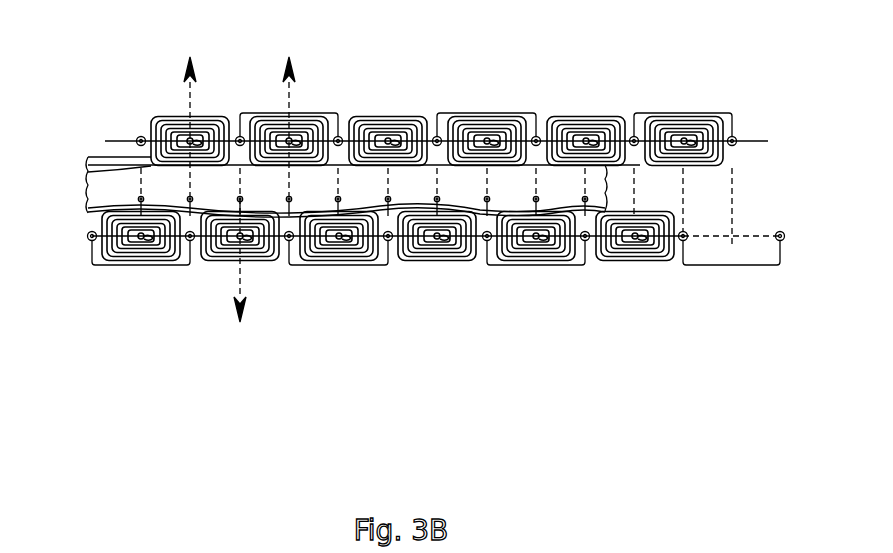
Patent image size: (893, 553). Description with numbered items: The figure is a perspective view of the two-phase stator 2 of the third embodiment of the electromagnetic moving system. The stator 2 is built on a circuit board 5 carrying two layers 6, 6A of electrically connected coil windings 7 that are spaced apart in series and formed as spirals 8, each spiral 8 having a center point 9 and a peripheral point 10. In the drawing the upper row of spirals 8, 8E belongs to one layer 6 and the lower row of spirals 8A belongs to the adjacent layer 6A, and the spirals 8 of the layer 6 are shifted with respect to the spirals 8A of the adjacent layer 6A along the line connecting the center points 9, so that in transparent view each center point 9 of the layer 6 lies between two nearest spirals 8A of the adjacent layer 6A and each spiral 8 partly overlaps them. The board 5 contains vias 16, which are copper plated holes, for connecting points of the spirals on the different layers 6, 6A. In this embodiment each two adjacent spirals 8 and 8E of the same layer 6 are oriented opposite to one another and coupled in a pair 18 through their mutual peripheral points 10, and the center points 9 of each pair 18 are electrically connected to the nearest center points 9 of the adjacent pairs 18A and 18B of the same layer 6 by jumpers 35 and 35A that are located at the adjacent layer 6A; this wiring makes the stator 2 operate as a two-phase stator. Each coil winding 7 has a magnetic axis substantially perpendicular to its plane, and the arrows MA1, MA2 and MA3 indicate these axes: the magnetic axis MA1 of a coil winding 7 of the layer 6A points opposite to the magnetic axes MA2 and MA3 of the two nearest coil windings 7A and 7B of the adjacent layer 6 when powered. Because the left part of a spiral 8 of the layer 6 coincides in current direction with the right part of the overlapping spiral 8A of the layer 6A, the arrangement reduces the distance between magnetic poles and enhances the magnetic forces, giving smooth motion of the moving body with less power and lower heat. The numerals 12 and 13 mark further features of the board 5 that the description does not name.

The stator 2 is at (650, 284).
The circuit board 5 is at (92, 163).
The layer 6 is at (155, 118).
The adjacent layer 6A is at (216, 248).
The coil winding 7 is at (266, 256).
The coil winding 7A is at (217, 118).
The coil winding 7B is at (317, 118).
The spiral 8 is at (405, 118).
The spiral 8A is at (430, 263).
The spiral 8E is at (515, 125).
The center point 9 is at (487, 128).
The peripheral point 10 is at (633, 125).
The conductor 12 is at (172, 245).
The connecting line (21) 13 is at (755, 132).
The via 16 is at (88, 207).
The pair 18 is at (440, 162).
The adjacent pair 18A is at (88, 177).
The adjacent pair 18B is at (710, 165).
The jumper 35 is at (360, 265).
The jumper 35A is at (583, 265).
The magnetic axis direction MA1 is at (242, 260).
The magnetic axis direction MA2 is at (293, 114).
The magnetic axis direction MA3 is at (194, 114).